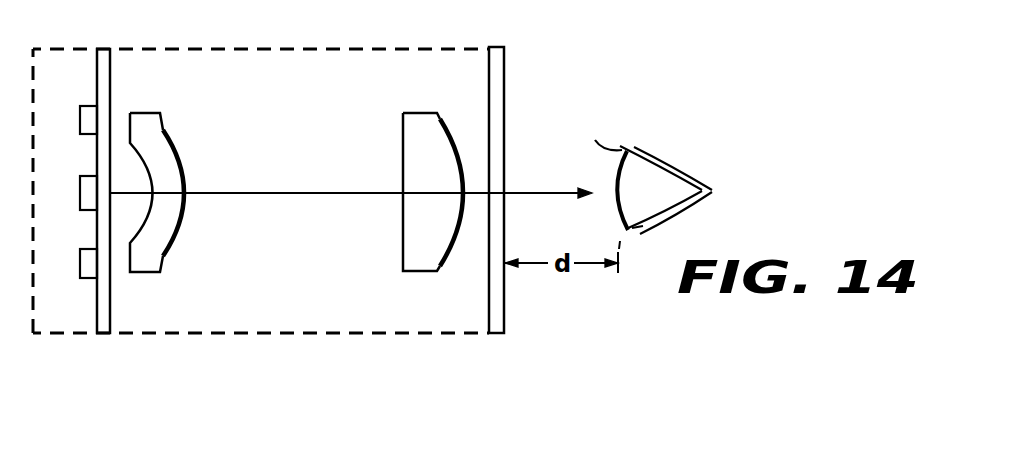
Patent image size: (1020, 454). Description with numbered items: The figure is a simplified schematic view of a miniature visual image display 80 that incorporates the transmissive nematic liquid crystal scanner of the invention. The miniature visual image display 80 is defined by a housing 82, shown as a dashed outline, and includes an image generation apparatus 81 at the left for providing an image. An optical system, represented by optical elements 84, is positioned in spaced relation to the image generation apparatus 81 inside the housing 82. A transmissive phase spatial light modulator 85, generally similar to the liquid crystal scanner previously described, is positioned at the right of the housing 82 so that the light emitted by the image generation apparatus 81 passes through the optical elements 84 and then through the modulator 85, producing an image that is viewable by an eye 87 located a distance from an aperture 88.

The miniature visual image display 80 is at (742, 334).
The image generation apparatus 81 is at (80, 184).
The housing 82 is at (424, 362).
The optical elements 84 is at (181, 172).
The transmissive phase spatial light modulator 85 is at (505, 78).
The eye 87 is at (654, 180).
The aperture 88 is at (609, 74).